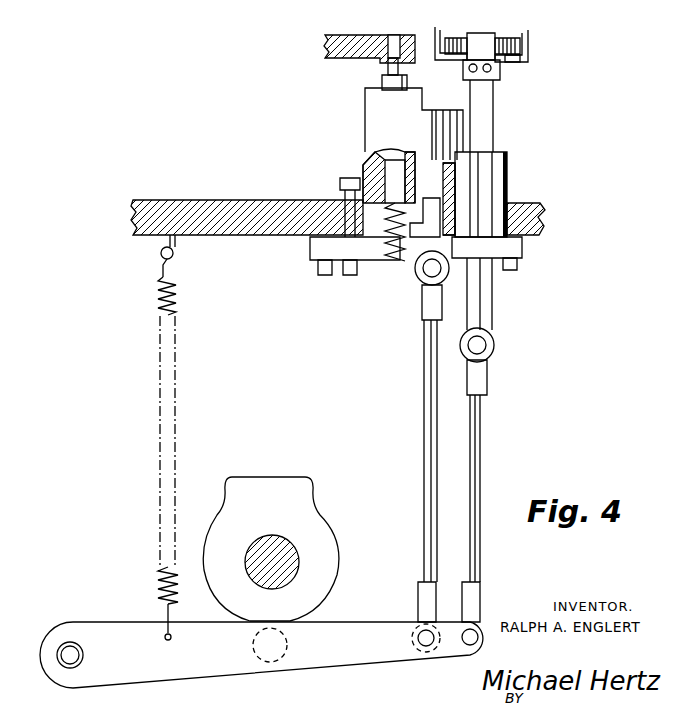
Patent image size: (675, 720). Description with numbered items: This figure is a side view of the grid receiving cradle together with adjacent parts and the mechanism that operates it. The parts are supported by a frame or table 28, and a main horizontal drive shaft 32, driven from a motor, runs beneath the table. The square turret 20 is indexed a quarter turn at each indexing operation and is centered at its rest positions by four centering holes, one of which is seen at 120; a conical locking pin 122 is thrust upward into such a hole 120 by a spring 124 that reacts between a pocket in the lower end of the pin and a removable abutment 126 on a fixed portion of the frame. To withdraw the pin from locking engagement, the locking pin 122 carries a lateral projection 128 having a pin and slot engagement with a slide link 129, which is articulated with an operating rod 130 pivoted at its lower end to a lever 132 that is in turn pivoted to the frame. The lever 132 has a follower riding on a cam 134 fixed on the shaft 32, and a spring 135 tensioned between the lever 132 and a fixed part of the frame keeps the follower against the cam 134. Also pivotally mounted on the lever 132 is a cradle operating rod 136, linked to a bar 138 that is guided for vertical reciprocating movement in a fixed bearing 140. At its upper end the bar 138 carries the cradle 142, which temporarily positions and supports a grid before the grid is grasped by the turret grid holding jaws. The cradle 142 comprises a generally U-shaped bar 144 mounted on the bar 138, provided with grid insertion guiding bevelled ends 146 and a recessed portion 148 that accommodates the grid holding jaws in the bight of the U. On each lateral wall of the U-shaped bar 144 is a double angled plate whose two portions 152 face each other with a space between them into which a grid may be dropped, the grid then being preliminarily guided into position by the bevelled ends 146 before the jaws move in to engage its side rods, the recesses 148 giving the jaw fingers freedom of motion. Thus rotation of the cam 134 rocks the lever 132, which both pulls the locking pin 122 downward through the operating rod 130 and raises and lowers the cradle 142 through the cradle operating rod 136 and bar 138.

The square turret 20 is at (325, 50).
The frame or table 28 is at (260, 200).
The main horizontal drive shaft 32 is at (300, 565).
The centering hole 120 is at (397, 34).
The conical locking pin 122 is at (388, 68).
The spring 124 is at (383, 245).
The removable abutment 126 is at (378, 262).
The lateral projection 128 is at (412, 257).
The slide link 129 is at (420, 183).
The operating rod 130 is at (425, 391).
The lever 132 is at (262, 672).
The cam 134 is at (337, 543).
The spring 135 is at (160, 568).
The cradle operating rod 136 is at (482, 437).
The bar 138 is at (495, 124).
The fixed bearing 140 is at (507, 165).
The cradle 142 is at (516, 58).
The U-shaped bar 144 is at (448, 65).
The bevelled ends 146 is at (530, 36).
The recessed portion 148 is at (515, 63).
The plate portions 152 is at (485, 40).